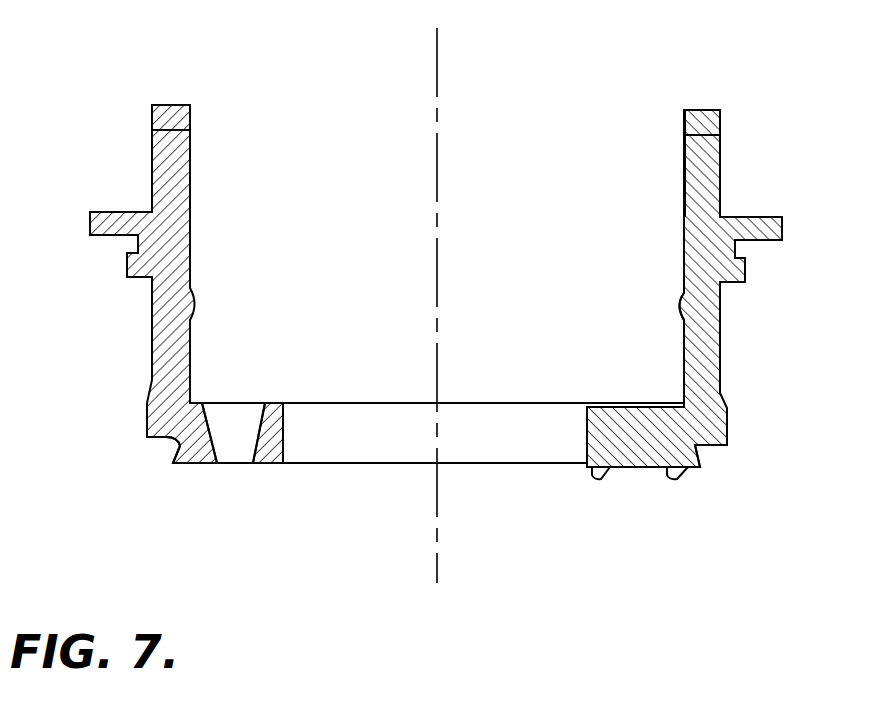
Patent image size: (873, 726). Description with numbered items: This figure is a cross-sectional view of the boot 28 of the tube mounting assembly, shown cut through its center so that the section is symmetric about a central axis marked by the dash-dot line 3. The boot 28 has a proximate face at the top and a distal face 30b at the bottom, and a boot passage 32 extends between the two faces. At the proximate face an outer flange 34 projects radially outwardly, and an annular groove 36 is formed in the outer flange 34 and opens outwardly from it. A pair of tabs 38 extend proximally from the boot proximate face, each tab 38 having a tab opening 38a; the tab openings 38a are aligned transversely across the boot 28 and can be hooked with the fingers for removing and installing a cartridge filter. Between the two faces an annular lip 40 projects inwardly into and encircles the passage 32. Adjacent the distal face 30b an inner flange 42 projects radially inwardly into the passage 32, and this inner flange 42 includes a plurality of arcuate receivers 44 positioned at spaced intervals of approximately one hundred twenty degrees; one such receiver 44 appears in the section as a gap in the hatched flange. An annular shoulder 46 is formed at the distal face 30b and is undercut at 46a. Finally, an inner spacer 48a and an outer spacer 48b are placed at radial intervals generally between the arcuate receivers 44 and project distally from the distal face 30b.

The section line / center axis 3 is at (437, 73).
The boot 28 is at (730, 100).
The distal face 30b is at (186, 465).
The boot passage 32 is at (587, 428).
The outer flange 34 is at (783, 218).
The annular groove 36 is at (738, 245).
The tab 38 is at (189, 112).
The tab opening 38a is at (182, 134).
The annular lip 40 is at (672, 300).
The inner flange 42 is at (603, 405).
The arcuate receiver 44 is at (255, 428).
The annular shoulder 46 is at (178, 442).
The undercut 46a is at (178, 447).
The inner spacer 48a is at (607, 480).
The outer spacer 48b is at (677, 480).